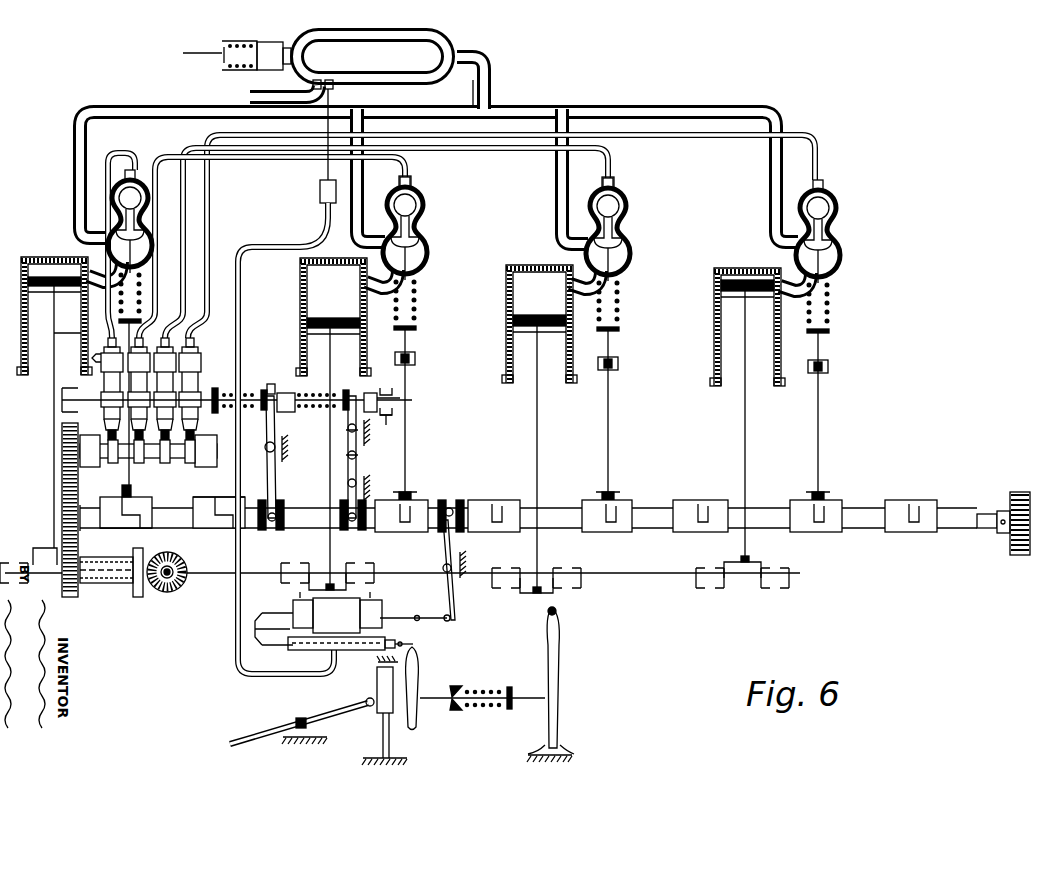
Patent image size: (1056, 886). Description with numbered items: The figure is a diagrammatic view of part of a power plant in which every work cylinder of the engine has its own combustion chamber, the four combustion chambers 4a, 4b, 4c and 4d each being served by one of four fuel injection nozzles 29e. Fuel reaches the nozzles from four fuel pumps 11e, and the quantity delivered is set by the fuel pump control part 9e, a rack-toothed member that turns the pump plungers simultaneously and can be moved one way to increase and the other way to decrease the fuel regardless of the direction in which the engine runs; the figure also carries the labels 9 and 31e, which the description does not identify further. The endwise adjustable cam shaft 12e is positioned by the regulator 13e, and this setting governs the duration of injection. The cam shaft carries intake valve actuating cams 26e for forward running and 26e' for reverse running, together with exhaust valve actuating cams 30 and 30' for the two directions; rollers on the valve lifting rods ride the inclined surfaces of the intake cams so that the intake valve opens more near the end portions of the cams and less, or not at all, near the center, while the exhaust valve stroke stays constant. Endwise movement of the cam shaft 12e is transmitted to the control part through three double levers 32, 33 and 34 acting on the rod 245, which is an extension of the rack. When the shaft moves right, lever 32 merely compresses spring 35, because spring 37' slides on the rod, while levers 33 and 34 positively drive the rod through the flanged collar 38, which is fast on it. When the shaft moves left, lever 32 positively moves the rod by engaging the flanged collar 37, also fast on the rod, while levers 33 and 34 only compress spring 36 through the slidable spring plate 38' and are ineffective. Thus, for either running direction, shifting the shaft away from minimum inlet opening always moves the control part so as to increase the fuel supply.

The combustion chamber 4a is at (142, 194).
The combustion chamber 4b is at (414, 205).
The combustion chamber 4c is at (618, 207).
The fuel valve of fourth cylinder 4d is at (826, 204).
The fuel injection nozzle 29e is at (616, 184).
The fuel pump 11e is at (199, 357).
The control rod 9 is at (421, 391).
The fuel pump control part 9e is at (210, 412).
The spring 35 is at (262, 398).
The spring 37' is at (279, 371).
The flanged collar 37 is at (282, 446).
The double lever 32 is at (268, 420).
The spring plate 38' is at (342, 391).
The flanged collar 38 is at (372, 447).
The spring 36 is at (340, 410).
The double lever 34 is at (346, 420).
The rod 245 is at (386, 425).
The double lever 33 is at (348, 493).
The cam shaft 12e is at (176, 521).
The intake valve actuating cam 26e is at (117, 500).
The intake valve actuating cam 26e' is at (126, 533).
The cam 31e is at (130, 506).
The exhaust valve actuating cam 30 is at (219, 526).
The exhaust valve actuating cam 30' is at (219, 487).
The regulator 13e is at (352, 612).